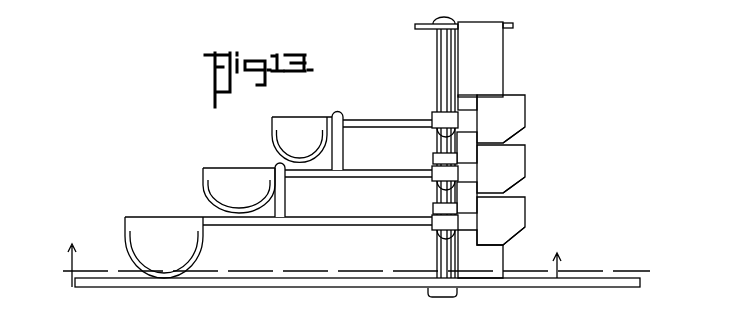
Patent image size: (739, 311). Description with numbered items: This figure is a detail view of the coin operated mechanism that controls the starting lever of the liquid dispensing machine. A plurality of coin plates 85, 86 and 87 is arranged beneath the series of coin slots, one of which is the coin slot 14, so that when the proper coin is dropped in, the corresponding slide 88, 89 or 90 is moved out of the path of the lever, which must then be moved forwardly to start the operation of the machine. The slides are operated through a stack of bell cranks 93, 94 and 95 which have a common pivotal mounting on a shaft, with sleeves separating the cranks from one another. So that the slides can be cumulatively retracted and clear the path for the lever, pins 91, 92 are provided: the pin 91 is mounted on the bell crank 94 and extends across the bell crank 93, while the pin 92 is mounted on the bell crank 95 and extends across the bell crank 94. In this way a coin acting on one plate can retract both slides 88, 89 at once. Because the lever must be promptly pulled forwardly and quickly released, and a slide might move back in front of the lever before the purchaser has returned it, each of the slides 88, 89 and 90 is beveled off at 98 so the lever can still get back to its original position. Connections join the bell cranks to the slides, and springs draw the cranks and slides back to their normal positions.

The coin slot 14 is at (343, 265).
The coin plate 85 is at (277, 127).
The coin plate 86 is at (227, 178).
The coin plate 87 is at (153, 227).
The slide 88 is at (515, 100).
The slide 89 is at (517, 160).
The slide 90 is at (527, 217).
The pin 91 is at (338, 112).
The pin 92 is at (286, 188).
The bell crank 93 is at (388, 119).
The bell crank 94 is at (375, 171).
The bell crank 95 is at (372, 211).
The bevel 98 is at (527, 132).